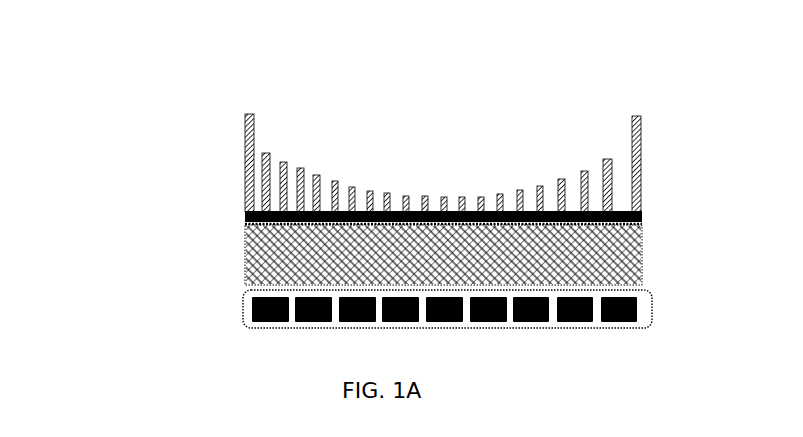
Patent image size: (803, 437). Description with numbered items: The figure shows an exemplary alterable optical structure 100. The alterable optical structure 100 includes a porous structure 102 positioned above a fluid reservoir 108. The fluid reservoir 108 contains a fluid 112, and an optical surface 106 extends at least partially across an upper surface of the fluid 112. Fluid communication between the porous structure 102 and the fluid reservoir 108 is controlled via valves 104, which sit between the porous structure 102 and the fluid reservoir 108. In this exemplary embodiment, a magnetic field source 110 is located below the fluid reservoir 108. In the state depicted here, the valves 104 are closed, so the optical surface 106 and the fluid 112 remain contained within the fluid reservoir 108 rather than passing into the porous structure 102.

The alterable optical structure 100 is at (173, 84).
The porous structure 102 is at (245, 158).
The valves 104 is at (245, 217).
The optical surface 106 is at (245, 224).
The fluid reservoir 108 is at (245, 270).
The magnetic field source 110 is at (243, 315).
The fluid 112 is at (602, 252).